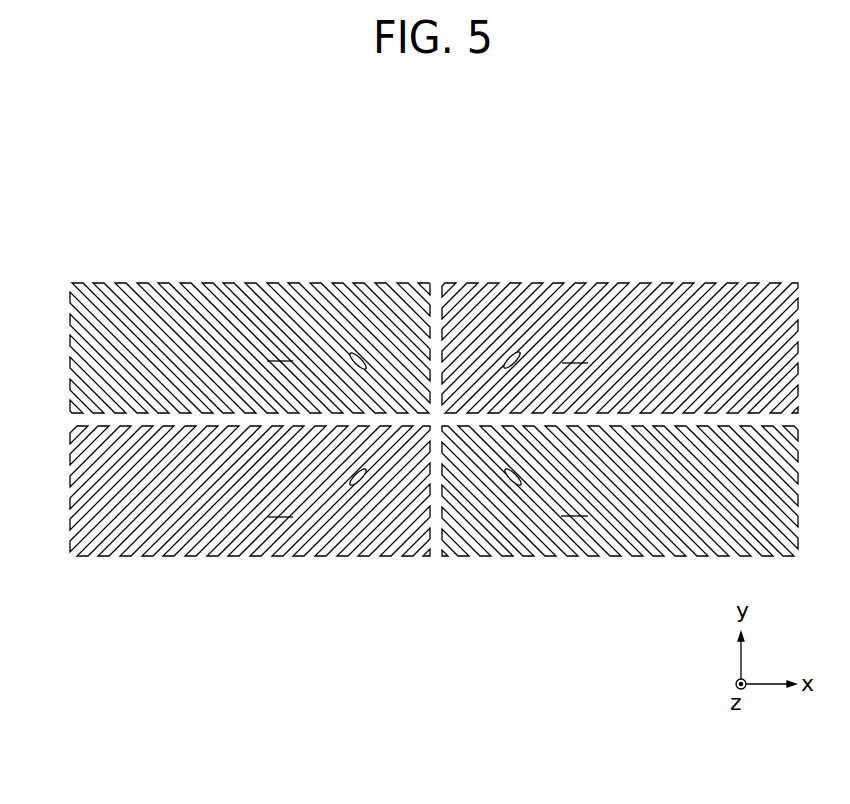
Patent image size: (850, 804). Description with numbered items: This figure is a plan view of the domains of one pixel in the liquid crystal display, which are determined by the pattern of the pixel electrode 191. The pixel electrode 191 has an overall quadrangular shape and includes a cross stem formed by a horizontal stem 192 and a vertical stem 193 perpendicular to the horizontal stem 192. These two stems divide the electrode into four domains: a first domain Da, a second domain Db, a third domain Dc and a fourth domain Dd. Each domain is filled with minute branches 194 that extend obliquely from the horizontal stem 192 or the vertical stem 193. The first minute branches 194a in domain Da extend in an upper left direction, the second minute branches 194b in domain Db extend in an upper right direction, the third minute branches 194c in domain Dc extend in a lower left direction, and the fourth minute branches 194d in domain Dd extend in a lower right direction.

The pixel electrode 191 is at (648, 237).
The horizontal stem 192 is at (232, 415).
The vertical stem 193 is at (435, 525).
The sub-pixel electrode (fine branch region) 194 is at (493, 283).
The first minute branches 194a is at (357, 321).
The second minute branches 194b is at (567, 313).
The third minute branches 194c is at (337, 520).
The fourth minute branches 194d is at (525, 532).